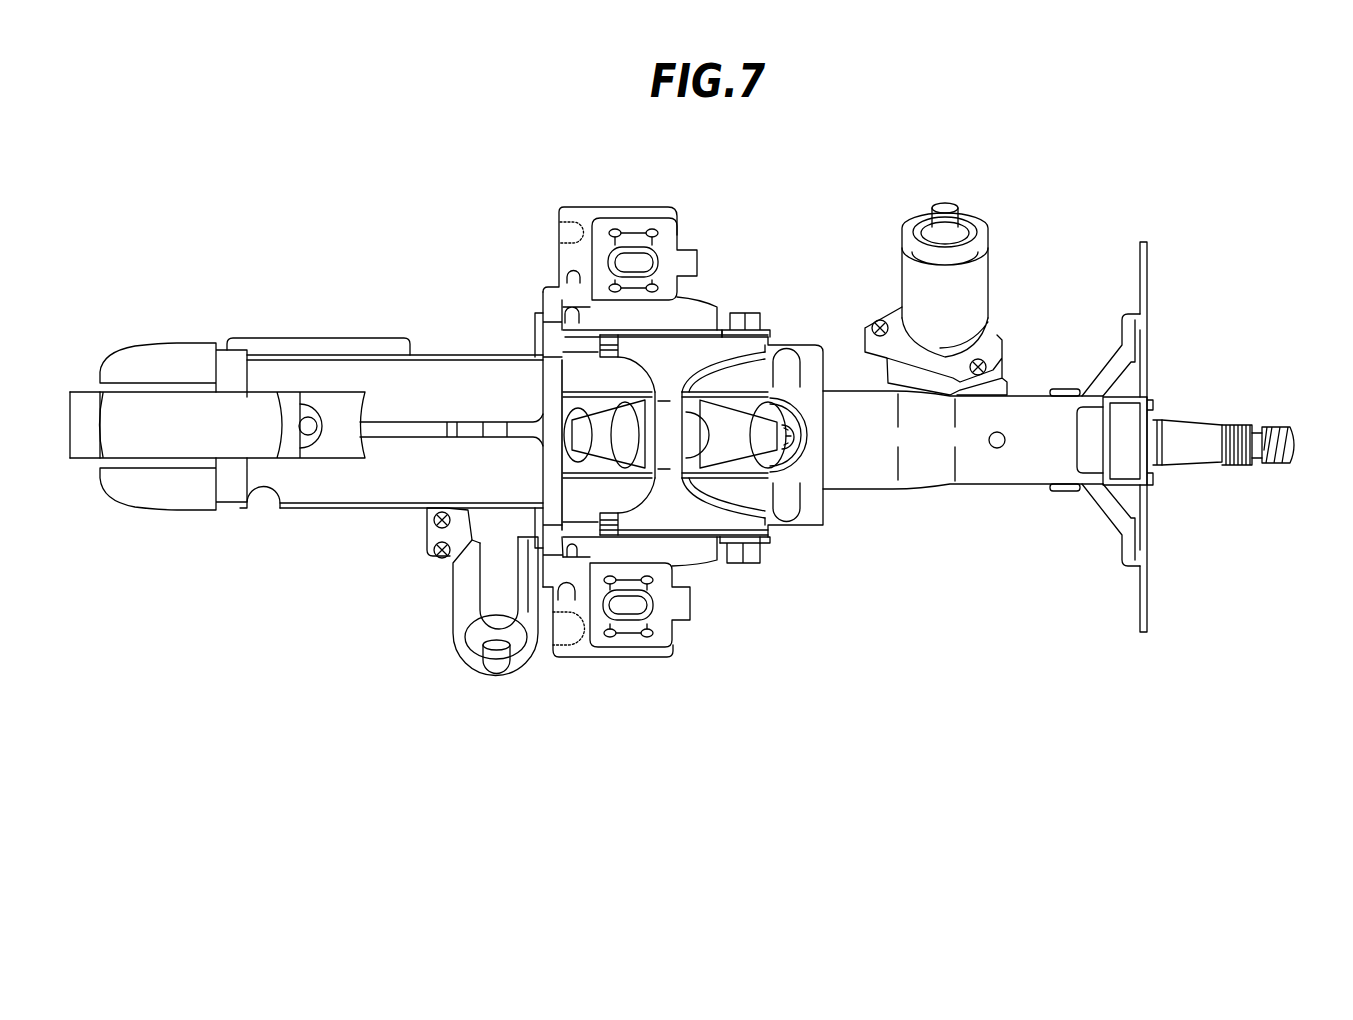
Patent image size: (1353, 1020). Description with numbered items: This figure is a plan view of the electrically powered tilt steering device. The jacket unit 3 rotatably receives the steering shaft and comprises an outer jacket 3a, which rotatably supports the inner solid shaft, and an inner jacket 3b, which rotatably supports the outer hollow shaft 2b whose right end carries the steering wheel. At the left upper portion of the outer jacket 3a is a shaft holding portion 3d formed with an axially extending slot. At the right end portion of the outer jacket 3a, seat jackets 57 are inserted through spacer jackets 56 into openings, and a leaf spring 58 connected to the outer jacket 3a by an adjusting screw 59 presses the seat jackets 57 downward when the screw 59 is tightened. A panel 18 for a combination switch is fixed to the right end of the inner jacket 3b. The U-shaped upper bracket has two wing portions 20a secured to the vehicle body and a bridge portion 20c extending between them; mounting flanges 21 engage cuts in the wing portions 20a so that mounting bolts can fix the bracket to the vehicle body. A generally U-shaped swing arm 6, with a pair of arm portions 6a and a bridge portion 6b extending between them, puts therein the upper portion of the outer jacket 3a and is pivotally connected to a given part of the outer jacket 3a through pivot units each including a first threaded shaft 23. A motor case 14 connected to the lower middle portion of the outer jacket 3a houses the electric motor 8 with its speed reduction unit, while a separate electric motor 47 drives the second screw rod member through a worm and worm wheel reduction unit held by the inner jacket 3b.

The shaft holding portion 3d is at (173, 408).
The bridge portion 20c is at (548, 355).
The wing portion 20a is at (587, 213).
The mounting flange 21 is at (667, 695).
The jacket unit 3 is at (857, 205).
The outer jacket 3a is at (810, 388).
The inner jacket 3b is at (862, 405).
The first threaded shaft 23 is at (747, 314).
The swing arm 6 is at (813, 670).
The arm portion 6a is at (687, 438).
The bridge portion 6b is at (667, 443).
The seat jacket 57 is at (795, 440).
The spacer jacket 56 is at (788, 442).
The leaf spring 58 is at (747, 442).
The adjusting screw 59 is at (745, 528).
The electric motor 47 is at (977, 272).
The panel 18 is at (1147, 265).
The outer hollow shaft 2b is at (1190, 428).
The motor case 14 is at (430, 533).
The electric motor 8 is at (460, 603).